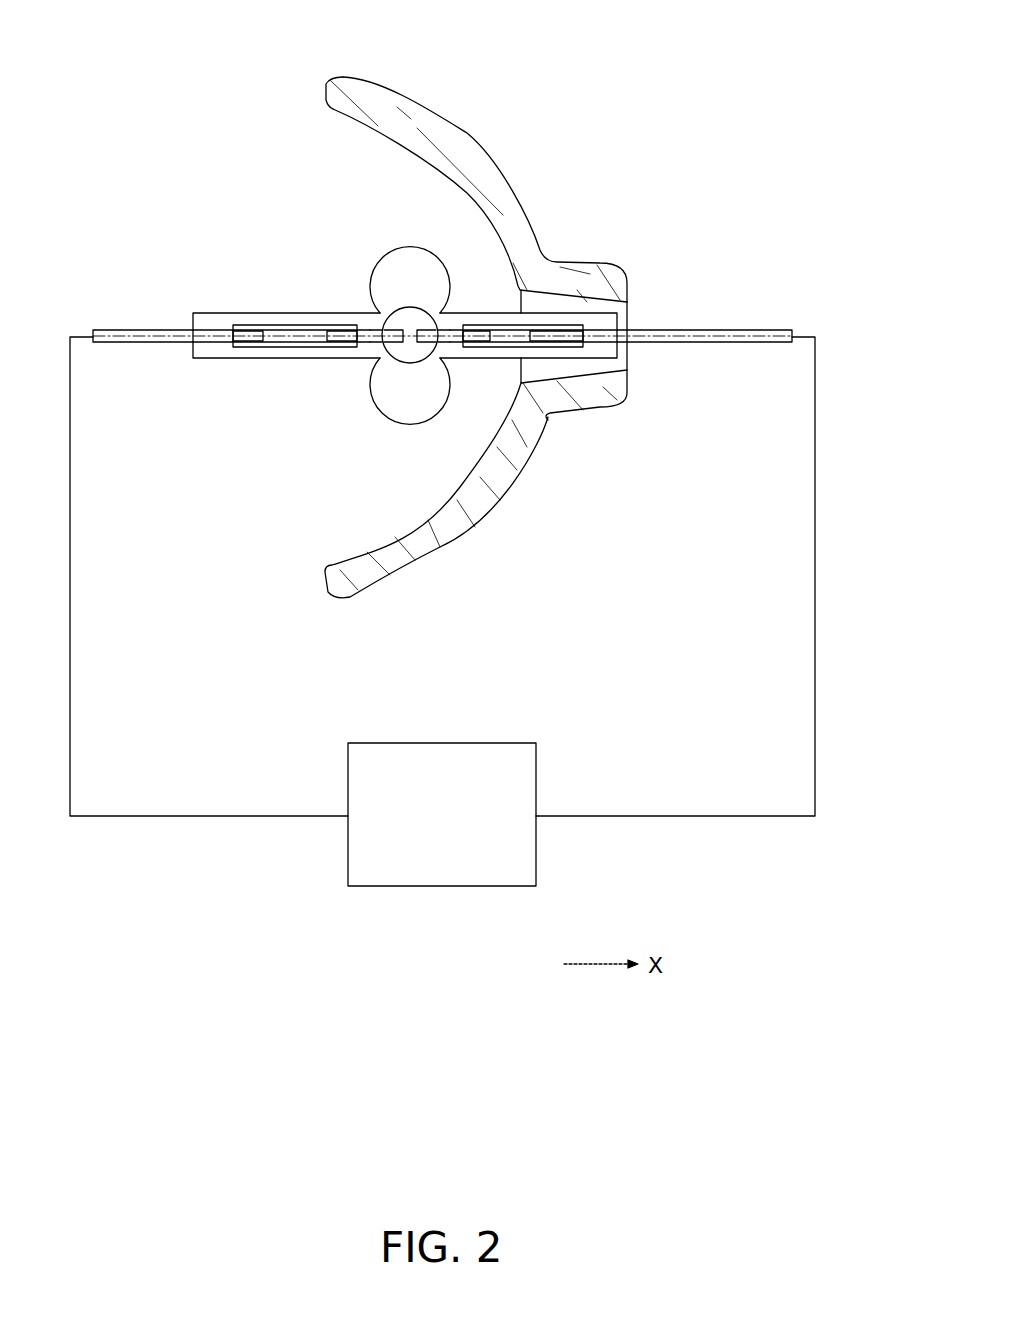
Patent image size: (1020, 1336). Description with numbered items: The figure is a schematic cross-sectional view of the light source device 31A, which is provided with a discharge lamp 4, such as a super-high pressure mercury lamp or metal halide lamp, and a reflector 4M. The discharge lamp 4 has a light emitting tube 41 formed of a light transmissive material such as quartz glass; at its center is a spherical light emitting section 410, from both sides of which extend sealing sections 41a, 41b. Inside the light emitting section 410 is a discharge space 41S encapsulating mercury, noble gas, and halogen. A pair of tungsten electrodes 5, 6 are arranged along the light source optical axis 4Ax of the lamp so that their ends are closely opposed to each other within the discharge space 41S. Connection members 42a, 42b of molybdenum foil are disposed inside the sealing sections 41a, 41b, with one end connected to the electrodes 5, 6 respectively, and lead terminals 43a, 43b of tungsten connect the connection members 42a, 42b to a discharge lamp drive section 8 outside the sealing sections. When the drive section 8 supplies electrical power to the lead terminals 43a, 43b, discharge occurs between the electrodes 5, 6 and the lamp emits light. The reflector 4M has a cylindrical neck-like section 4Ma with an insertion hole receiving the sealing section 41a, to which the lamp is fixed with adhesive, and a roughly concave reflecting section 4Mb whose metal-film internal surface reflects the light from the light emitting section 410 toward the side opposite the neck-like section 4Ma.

The light source device 31A is at (702, 51).
The reflector 4M is at (476, 331).
The reflecting section 4Mb is at (442, 138).
The neck-like section 4Ma is at (592, 270).
The discharge lamp 4 is at (442, 339).
The light source optical axis 4Ax is at (118, 345).
The light emitting tube 41 is at (405, 364).
The sealing section 41a is at (487, 350).
The sealing section 41b is at (223, 350).
The discharge space 41S is at (413, 317).
The light emitting section 410 is at (392, 368).
The connection member 42a is at (500, 325).
The connection member 42b is at (287, 325).
The lead terminal 43a is at (715, 330).
The lead terminal 43b is at (150, 330).
The electrode 5 is at (424, 325).
The electrode 6 is at (393, 325).
The discharge lamp drive section 8 is at (480, 743).